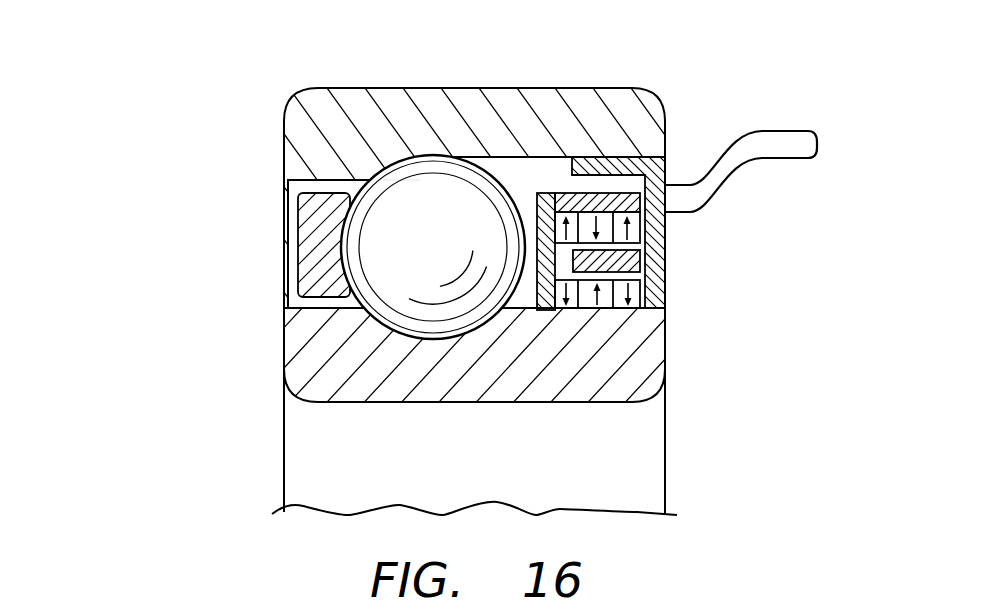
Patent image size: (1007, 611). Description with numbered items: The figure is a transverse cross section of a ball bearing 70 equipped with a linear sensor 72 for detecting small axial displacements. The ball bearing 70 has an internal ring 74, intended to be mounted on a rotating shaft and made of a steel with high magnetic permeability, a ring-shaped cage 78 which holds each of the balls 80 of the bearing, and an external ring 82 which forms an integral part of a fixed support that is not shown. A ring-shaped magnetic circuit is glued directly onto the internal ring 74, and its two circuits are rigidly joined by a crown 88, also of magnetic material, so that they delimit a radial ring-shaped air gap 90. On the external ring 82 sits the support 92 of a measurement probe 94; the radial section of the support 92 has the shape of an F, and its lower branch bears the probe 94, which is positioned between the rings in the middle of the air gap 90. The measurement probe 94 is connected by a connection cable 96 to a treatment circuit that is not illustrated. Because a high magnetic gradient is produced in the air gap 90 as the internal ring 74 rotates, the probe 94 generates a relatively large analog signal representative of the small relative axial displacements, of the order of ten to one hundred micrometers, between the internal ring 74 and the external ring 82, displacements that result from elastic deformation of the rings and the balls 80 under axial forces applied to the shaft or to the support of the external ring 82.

The ball bearing 70 is at (176, 245).
The linear sensor 72 is at (722, 274).
The internal ring 74 is at (334, 337).
The ring-shaped cage 78 is at (317, 212).
The balls 80 is at (407, 170).
The external ring 82 is at (502, 102).
The crown 88 is at (547, 300).
The radial ring-shaped air gap 90 is at (563, 257).
The support 92 is at (658, 308).
The measurement probe 94 is at (610, 257).
The connection cable 96 is at (775, 143).